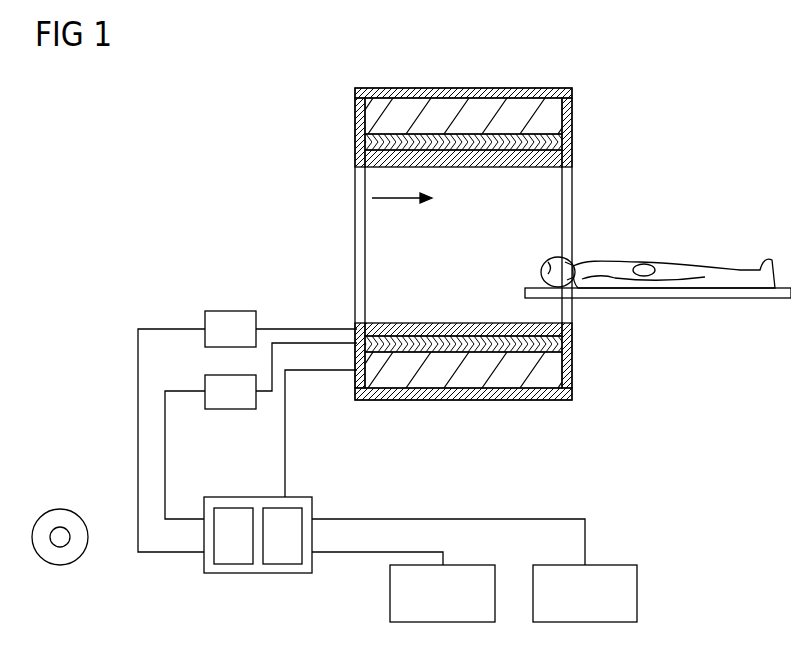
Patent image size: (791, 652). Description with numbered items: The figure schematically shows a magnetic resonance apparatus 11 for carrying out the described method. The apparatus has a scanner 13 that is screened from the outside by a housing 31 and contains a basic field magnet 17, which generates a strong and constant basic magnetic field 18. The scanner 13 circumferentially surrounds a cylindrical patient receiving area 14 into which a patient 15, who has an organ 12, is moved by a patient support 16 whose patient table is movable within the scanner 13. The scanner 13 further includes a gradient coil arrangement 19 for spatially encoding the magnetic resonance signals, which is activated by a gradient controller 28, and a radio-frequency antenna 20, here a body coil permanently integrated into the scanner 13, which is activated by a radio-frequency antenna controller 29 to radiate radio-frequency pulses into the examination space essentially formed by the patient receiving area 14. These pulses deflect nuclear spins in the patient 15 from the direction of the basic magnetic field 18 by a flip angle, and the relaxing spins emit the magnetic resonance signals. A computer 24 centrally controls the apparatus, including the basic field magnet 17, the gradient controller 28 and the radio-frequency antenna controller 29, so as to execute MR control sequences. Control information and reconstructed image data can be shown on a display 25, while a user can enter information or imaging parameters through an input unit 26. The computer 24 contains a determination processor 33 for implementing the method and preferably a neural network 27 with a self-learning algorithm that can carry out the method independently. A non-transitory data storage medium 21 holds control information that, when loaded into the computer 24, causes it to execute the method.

The magnetic resonance apparatus 11 is at (682, 146).
The organ 12 is at (646, 264).
The scanner 13 is at (343, 101).
The patient receiving area 14 is at (547, 196).
The patient 15 is at (738, 270).
The patient support 16 is at (770, 298).
The basic field magnet 17 is at (562, 120).
The basic magnetic field 18 is at (396, 198).
The gradient coil arrangement 19 is at (375, 142).
The radio-frequency antenna 20 is at (378, 157).
The data storage medium 21 is at (60, 508).
The computer 24 is at (269, 528).
The display 25 is at (390, 590).
The input unit 26 is at (637, 593).
The neural network 27 is at (282, 564).
The gradient controller 28 is at (229, 409).
The radio-frequency antenna controller 29 is at (243, 311).
The housing 31 is at (519, 88).
The determination processor 33 is at (232, 564).